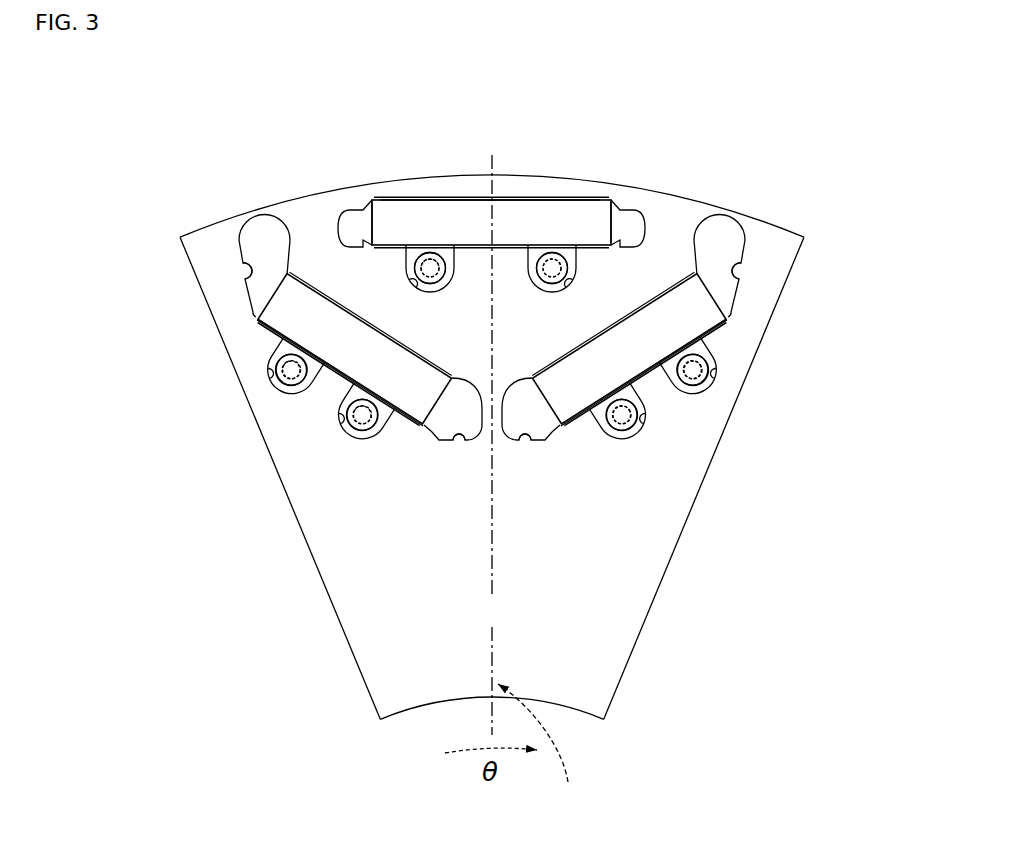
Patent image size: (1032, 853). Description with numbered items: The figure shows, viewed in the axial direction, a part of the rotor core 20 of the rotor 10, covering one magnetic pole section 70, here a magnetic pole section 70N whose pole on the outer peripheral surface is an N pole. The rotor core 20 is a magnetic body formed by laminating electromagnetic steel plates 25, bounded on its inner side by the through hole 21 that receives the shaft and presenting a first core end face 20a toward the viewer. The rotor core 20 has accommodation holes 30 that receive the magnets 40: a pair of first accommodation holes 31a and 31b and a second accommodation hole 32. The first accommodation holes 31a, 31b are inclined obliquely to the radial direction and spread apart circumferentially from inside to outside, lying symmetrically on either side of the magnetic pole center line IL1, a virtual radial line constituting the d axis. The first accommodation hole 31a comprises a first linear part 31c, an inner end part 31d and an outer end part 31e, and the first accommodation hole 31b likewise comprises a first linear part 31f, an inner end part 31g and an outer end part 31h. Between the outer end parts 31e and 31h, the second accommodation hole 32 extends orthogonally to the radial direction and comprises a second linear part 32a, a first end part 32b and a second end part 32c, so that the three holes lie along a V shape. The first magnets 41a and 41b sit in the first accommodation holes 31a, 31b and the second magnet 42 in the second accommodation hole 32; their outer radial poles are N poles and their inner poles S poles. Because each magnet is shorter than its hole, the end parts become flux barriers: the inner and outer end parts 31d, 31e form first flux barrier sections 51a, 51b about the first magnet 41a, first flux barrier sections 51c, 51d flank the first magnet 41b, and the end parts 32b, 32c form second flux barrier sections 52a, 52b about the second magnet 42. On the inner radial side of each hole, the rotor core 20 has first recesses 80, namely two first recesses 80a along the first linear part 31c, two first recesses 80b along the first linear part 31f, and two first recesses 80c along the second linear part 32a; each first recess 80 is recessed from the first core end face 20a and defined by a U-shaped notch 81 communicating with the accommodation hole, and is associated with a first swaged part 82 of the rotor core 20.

The rotor 10 is at (582, 90).
The rotor core 20 is at (678, 192).
The first core end face 20a is at (617, 640).
The through hole 21 is at (577, 712).
The electromagnetic steel plates 25 is at (645, 570).
The accommodation holes 30 is at (491, 271).
The first accommodation hole 31a is at (722, 315).
The first accommodation hole 31b is at (265, 312).
The first linear part 31c is at (641, 373).
The inner end part 31d is at (532, 445).
The outer end part 31e is at (737, 272).
The first linear part 31f is at (335, 375).
The inner end part 31g is at (455, 448).
The outer end part 31h is at (247, 270).
The second accommodation hole 32 is at (458, 205).
The second linear part 32a is at (522, 203).
The first end part 32b is at (628, 222).
The second end part 32c is at (352, 207).
The magnets 40 is at (493, 297).
The first magnet 41a is at (672, 293).
The first magnet 41b is at (312, 297).
The second magnet 42 is at (509, 200).
The first flux barrier section 51a is at (549, 442).
The first flux barrier section 51b is at (722, 235).
The first flux barrier section 51c is at (436, 441).
The first flux barrier section 51d is at (260, 238).
The second flux barrier section 52a is at (620, 210).
The second flux barrier section 52b is at (363, 210).
The magnetic pole section 70 is at (483, 445).
The magnetic pole section 70N is at (487, 470).
The first recess 80 is at (489, 332).
The first recesses 80a is at (713, 372).
The first recesses 80b is at (268, 369).
The first recesses 80c is at (445, 286).
The notch 81 is at (418, 246).
The first swaged part 82 is at (431, 262).
The magnetic pole center line IL1 is at (542, 748).